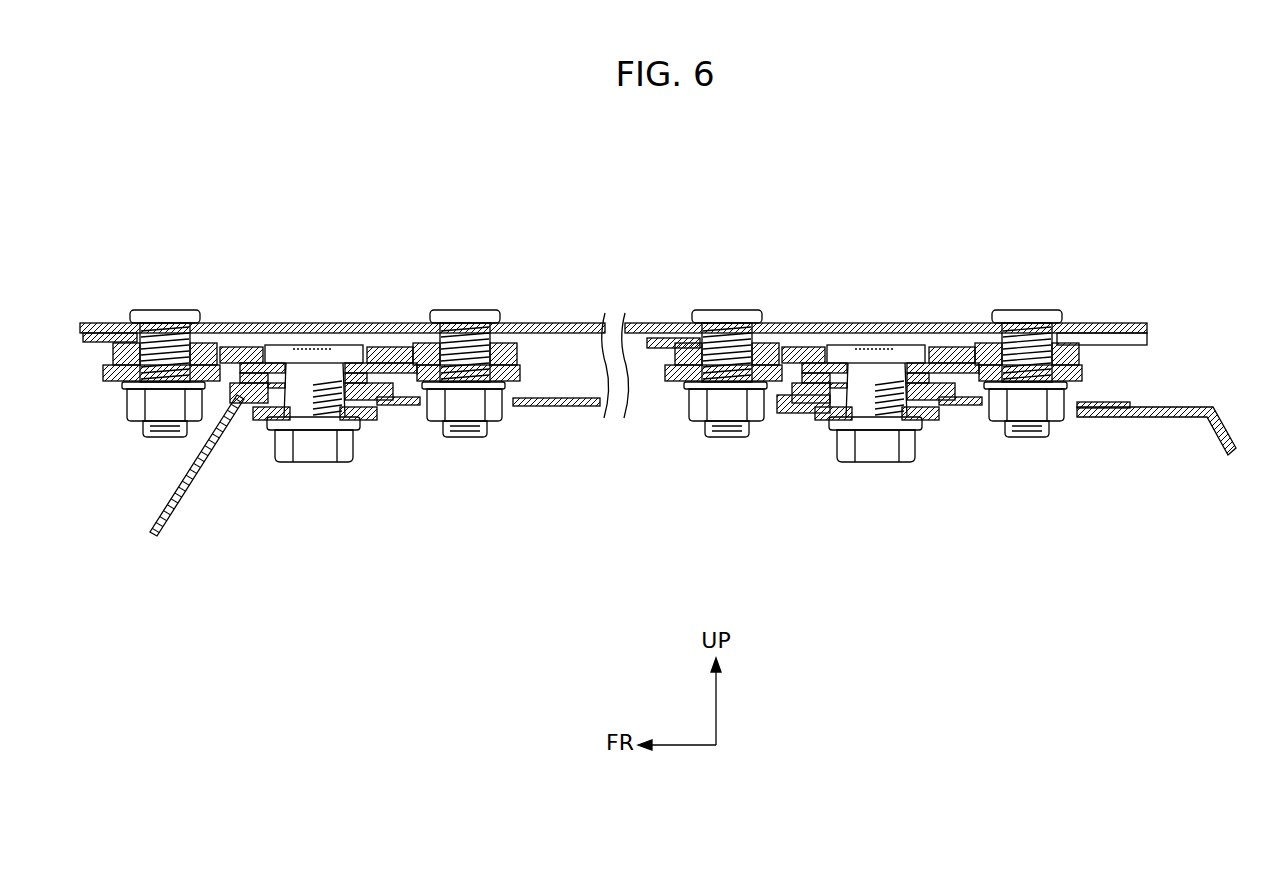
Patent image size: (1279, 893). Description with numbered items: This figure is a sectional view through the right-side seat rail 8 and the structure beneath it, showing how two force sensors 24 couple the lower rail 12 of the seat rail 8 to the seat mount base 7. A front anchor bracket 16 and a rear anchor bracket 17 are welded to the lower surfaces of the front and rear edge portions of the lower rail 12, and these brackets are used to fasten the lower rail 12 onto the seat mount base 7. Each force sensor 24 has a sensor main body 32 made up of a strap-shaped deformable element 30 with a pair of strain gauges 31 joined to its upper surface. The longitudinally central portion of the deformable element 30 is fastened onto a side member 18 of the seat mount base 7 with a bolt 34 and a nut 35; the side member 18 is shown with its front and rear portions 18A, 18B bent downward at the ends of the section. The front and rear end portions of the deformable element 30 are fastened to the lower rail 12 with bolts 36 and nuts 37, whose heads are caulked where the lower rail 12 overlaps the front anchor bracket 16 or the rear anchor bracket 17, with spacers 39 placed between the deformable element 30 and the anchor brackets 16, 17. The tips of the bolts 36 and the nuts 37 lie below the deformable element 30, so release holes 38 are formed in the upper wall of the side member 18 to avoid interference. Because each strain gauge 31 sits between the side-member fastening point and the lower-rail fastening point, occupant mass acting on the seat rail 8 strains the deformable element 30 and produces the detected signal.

The seat rail 8 is at (97, 316).
The lower rail 12 is at (607, 273).
The front anchor bracket 16 is at (100, 343).
The rear anchor bracket 17 is at (1143, 344).
The seat mount base 7 is at (705, 426).
The side member 18 is at (705, 426).
The front bracket portion 18A is at (205, 456).
The rear bracket portion 18B is at (1138, 418).
The force sensor 24 is at (599, 390).
The deformable element 30 is at (293, 258).
The strain gauge 31 is at (336, 323).
The sensor main body 32 is at (597, 290).
The bolt 34 is at (313, 378).
The nut 35 is at (323, 463).
The bolt 36 is at (165, 310).
The nut 37 is at (137, 414).
The release hole 38 is at (418, 407).
The spacer 39 is at (219, 342).